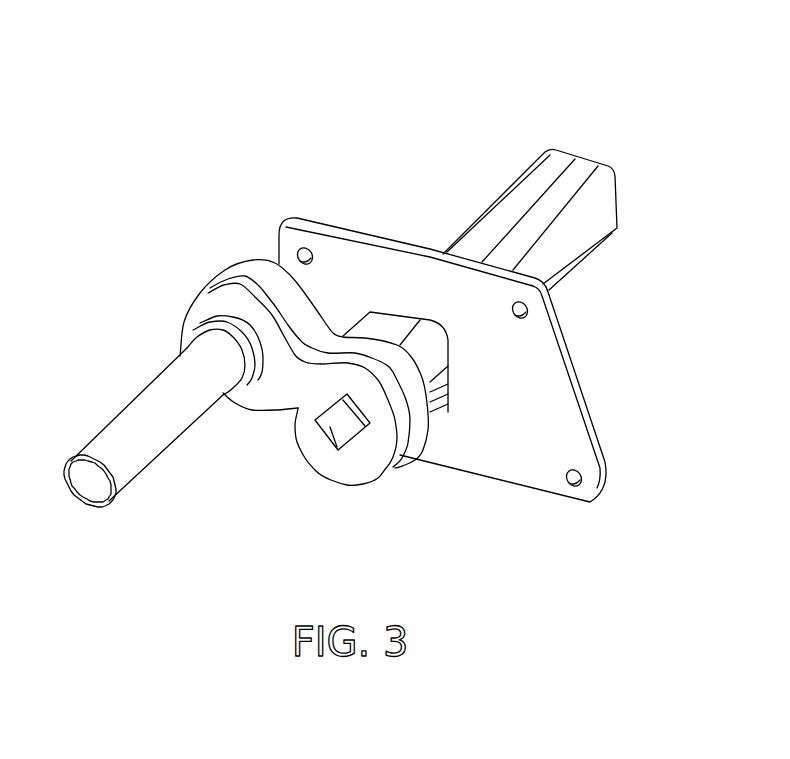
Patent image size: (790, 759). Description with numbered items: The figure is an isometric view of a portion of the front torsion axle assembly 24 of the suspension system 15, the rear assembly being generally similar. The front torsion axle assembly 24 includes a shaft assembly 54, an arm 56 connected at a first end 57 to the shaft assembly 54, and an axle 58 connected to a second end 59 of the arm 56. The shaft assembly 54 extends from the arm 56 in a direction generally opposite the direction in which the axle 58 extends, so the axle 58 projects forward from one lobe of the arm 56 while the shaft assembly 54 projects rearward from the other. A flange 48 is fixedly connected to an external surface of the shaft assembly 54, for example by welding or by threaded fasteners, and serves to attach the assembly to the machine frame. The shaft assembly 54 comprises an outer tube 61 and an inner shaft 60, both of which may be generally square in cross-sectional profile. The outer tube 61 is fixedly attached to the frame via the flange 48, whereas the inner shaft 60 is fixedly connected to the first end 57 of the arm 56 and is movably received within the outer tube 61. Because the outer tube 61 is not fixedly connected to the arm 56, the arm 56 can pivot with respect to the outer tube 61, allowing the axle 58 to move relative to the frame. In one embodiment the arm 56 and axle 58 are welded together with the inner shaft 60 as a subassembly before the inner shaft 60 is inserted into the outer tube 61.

The handle assembly 15 is at (96, 257).
The front torsion axle assembly 24 is at (487, 533).
The flange 48 is at (564, 436).
The shaft assembly 54 is at (637, 108).
The arm 56 is at (292, 408).
The first end 57 is at (385, 462).
The axle 58 is at (140, 427).
The second end 59 is at (230, 308).
The inner shaft 60 is at (331, 427).
The outer tube 61 is at (620, 207).